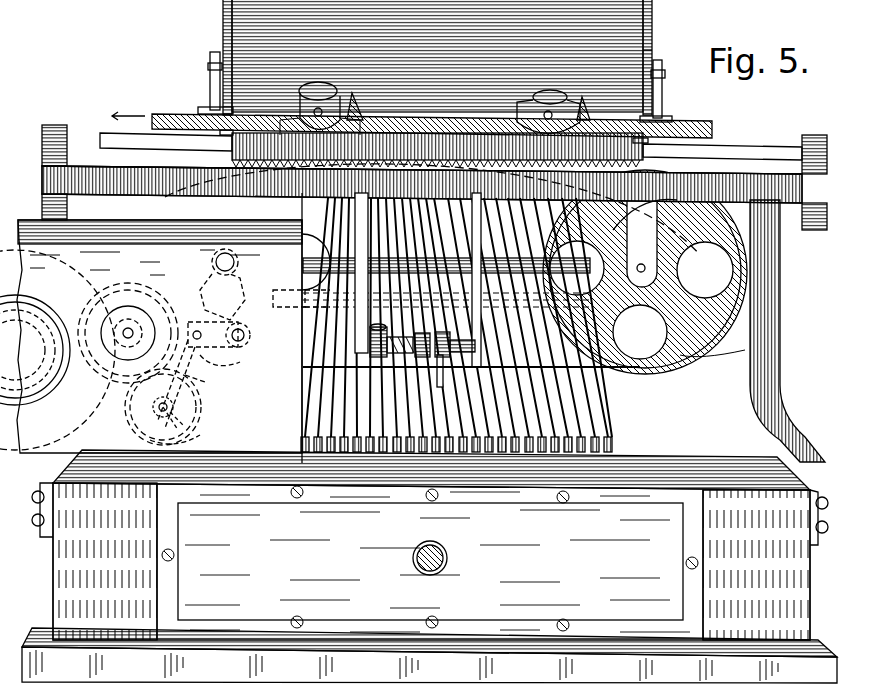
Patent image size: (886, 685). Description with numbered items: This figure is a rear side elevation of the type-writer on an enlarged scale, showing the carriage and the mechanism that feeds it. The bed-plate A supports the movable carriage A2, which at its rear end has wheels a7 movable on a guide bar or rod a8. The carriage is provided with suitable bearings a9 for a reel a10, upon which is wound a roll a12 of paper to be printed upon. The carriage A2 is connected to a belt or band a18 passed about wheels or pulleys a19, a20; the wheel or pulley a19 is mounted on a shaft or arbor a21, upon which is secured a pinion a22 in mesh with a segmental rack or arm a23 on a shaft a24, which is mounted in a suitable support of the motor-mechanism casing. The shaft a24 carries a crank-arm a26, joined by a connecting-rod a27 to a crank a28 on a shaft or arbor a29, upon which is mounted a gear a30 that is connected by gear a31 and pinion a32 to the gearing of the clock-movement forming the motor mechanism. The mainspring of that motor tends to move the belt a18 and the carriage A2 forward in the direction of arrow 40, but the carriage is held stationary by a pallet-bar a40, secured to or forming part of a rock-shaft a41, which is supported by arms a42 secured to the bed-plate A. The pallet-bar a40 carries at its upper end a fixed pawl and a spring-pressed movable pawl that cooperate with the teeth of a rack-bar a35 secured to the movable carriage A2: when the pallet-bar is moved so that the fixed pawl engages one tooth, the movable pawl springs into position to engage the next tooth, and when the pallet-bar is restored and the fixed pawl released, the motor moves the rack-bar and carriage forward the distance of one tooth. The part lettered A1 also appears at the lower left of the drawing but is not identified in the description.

The reel a10 is at (225, 26).
The roll of paper a12 is at (612, 55).
The bearings a9 is at (211, 82).
The movable carriage A2 is at (706, 117).
The wheels a7 is at (331, 83).
The arrow 40 is at (128, 106).
The bed-plate A is at (79, 165).
The guide bar or rod a8 is at (750, 148).
The rack-bar a35 is at (437, 150).
The belt or band a18 is at (660, 372).
The wheel or pulley a20 is at (698, 356).
The arms a42 is at (300, 215).
The pallet-bar a40 is at (437, 240).
The rock-shaft a41 is at (457, 367).
The wheel or pulley a19 is at (128, 290).
The pinion a32 is at (123, 316).
The gear a31 is at (112, 362).
The pinion a22 is at (212, 262).
The shaft or arbor a21 is at (228, 262).
The segmental rack or arm a23 is at (246, 290).
The shaft a24 is at (245, 337).
The crank-arm a26 is at (222, 350).
The connecting-rod a27 is at (200, 378).
The crank a28 is at (158, 409).
The shaft or arbor a29 is at (172, 406).
The gear a30 is at (188, 437).
The base bracket A1 is at (60, 573).